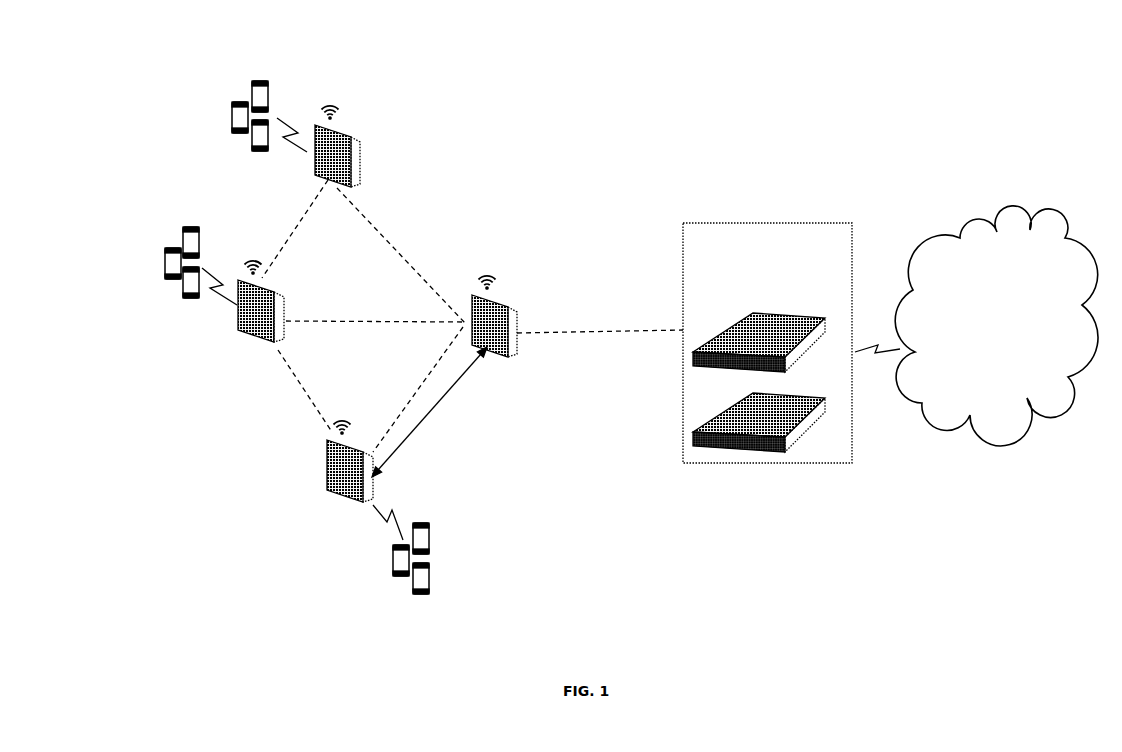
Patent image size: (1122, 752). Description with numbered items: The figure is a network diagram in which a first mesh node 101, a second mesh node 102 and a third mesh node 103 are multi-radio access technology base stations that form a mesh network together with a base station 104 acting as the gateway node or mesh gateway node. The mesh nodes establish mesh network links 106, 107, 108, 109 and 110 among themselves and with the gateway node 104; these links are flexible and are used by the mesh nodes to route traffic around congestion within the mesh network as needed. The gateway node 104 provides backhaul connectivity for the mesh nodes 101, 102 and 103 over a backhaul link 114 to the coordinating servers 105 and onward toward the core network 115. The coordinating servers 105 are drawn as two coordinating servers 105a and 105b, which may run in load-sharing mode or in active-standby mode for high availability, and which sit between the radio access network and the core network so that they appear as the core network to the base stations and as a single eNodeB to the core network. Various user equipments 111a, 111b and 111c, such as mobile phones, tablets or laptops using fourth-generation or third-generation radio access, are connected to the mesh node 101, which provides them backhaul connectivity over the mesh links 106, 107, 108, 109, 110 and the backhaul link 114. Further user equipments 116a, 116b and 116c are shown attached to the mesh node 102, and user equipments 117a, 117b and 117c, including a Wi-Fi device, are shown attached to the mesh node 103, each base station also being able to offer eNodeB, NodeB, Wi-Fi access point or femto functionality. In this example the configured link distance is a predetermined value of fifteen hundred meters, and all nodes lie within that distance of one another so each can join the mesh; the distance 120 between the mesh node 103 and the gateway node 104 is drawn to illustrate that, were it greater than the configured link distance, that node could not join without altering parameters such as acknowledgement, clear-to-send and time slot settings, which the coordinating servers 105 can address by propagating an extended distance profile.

The mesh node 1 101 is at (350, 133).
The mesh node 2 102 is at (238, 332).
The mesh node 3 103 is at (335, 502).
The gateway node base station 104 is at (505, 300).
The coordinating servers 105 is at (767, 322).
The coordinating server 105a is at (807, 315).
The coordinating server 105b is at (807, 393).
The mesh network link 106 is at (293, 245).
The mesh network link 107 is at (412, 260).
The mesh network link 108 is at (298, 387).
The mesh network link 109 is at (413, 392).
The mesh network link 110 is at (373, 318).
The user equipment 111a is at (230, 105).
The user equipment 111b is at (250, 152).
The user equipment 111c is at (270, 93).
The backhaul link 114 is at (610, 340).
The core network 115 is at (995, 213).
The 4G UE 116a is at (163, 267).
The 3G UE 116b is at (190, 227).
The 3G UE 116c is at (182, 287).
The Wi-Fi UE 117a is at (392, 553).
The 3G UE 117b is at (422, 597).
The 4G UE 117c is at (422, 520).
The distance 120 is at (468, 368).